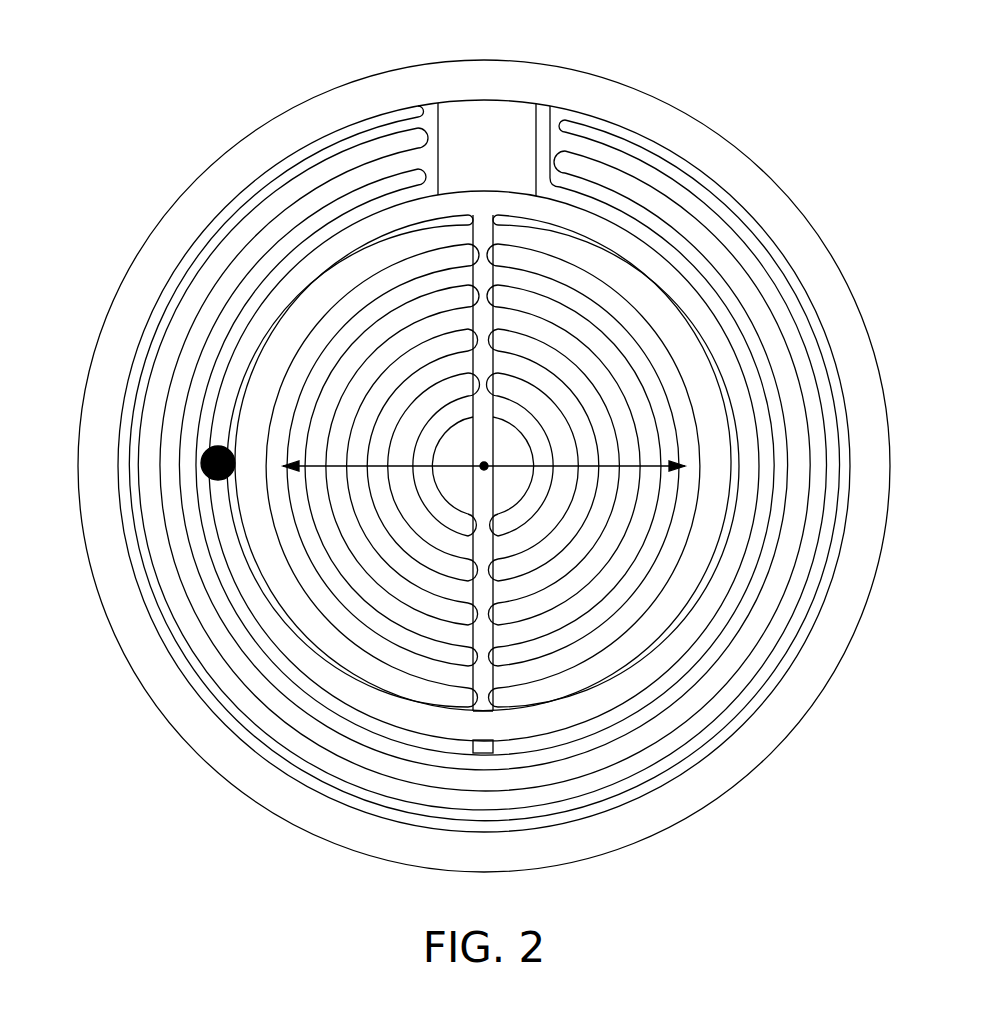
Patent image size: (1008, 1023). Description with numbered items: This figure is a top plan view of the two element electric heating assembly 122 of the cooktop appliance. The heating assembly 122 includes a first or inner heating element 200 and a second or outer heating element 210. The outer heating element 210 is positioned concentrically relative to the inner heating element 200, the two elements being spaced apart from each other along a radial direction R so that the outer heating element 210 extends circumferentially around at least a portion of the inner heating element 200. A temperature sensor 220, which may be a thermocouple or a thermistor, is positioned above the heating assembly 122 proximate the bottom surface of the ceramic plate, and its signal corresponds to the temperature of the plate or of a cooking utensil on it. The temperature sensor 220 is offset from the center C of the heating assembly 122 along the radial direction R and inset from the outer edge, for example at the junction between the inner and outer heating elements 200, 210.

The heating assembly 122 is at (484, 440).
The inner heating element 200 is at (637, 573).
The outer heating element 210 is at (190, 577).
The temperature sensor 220 is at (203, 452).
The radial direction R is at (647, 448).
The center C is at (498, 440).